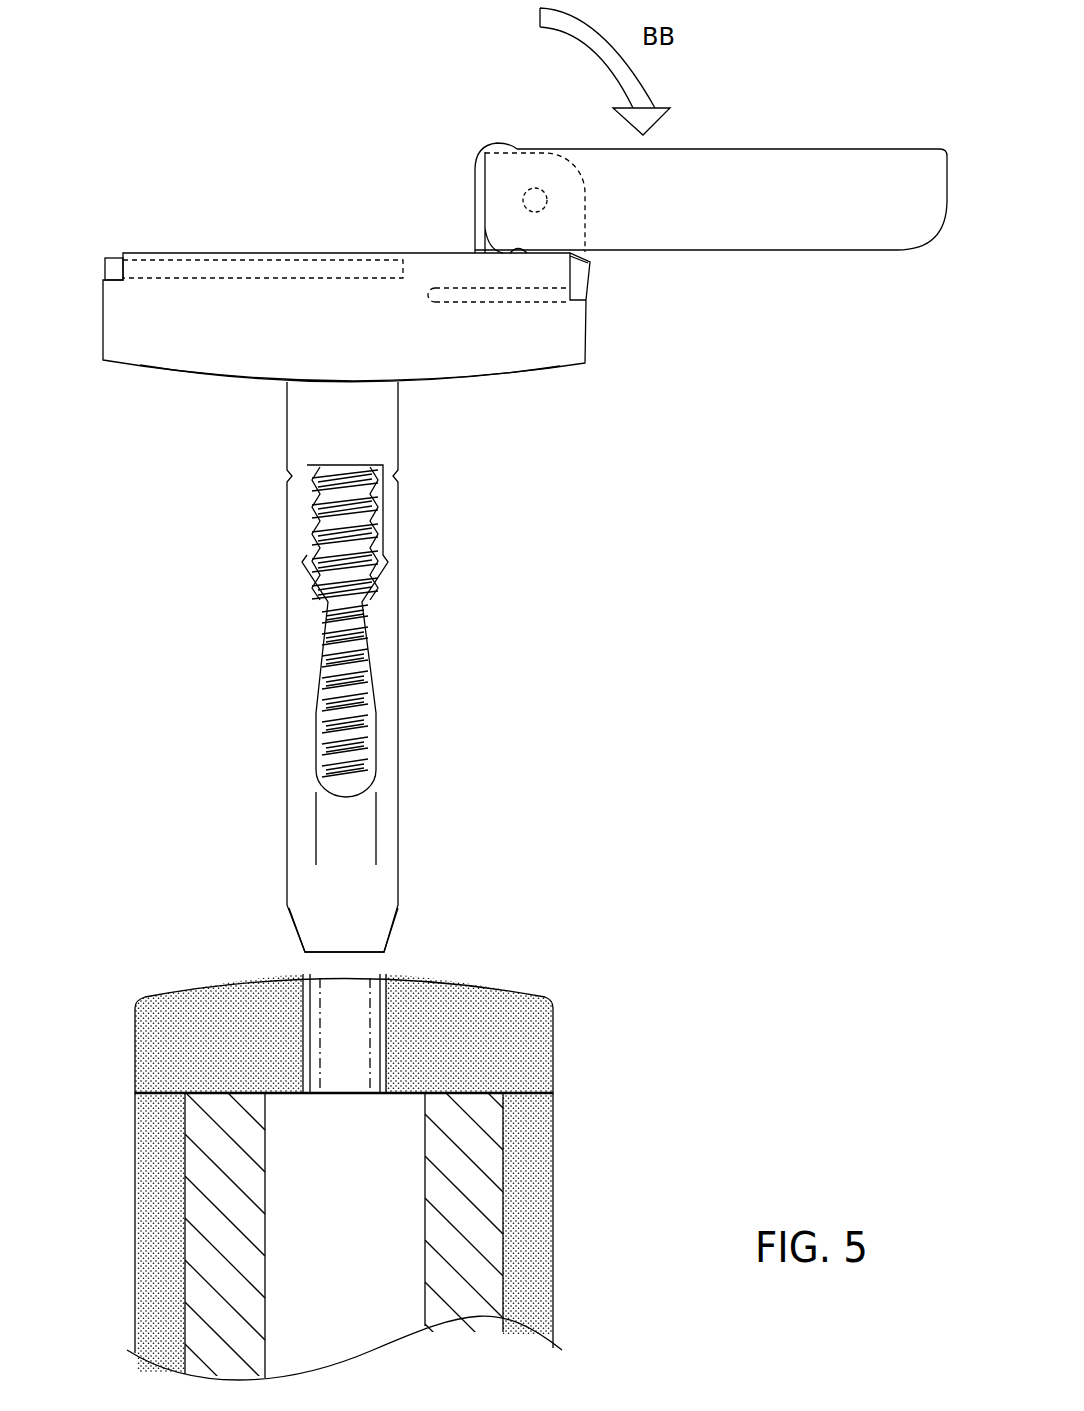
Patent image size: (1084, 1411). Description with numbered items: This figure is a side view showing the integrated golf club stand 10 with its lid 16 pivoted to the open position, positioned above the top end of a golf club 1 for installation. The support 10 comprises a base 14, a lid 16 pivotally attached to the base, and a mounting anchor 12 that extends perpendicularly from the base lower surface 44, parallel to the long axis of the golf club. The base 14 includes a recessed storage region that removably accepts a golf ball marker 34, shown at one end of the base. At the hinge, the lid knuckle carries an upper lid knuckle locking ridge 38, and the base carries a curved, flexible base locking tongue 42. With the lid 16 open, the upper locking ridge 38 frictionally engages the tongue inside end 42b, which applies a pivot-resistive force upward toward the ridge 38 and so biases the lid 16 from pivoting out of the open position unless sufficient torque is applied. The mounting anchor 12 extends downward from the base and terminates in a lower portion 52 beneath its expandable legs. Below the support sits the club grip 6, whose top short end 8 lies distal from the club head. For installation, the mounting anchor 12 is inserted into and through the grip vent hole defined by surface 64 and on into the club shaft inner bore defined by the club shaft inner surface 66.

The golf club 1 is at (133, 955).
The club grip 6 is at (137, 1257).
The club grip top end 8 is at (135, 1047).
The integrated golf club stand 10 is at (170, 135).
The mounting anchor 12 is at (268, 618).
The base 14 is at (102, 326).
The lid 16 is at (807, 162).
The golf ball marker 34 is at (105, 267).
The upper lid knuckle locking ridge 38 is at (497, 248).
The base locking tongue 42 is at (533, 273).
The inside end of base locking tongue 42b is at (500, 260).
The base lower surface 44 is at (165, 365).
The lower portion of mounting anchor 52 is at (410, 898).
The grip vent hole surface 64 is at (307, 1008).
The club shaft inner surface 66 is at (267, 1198).